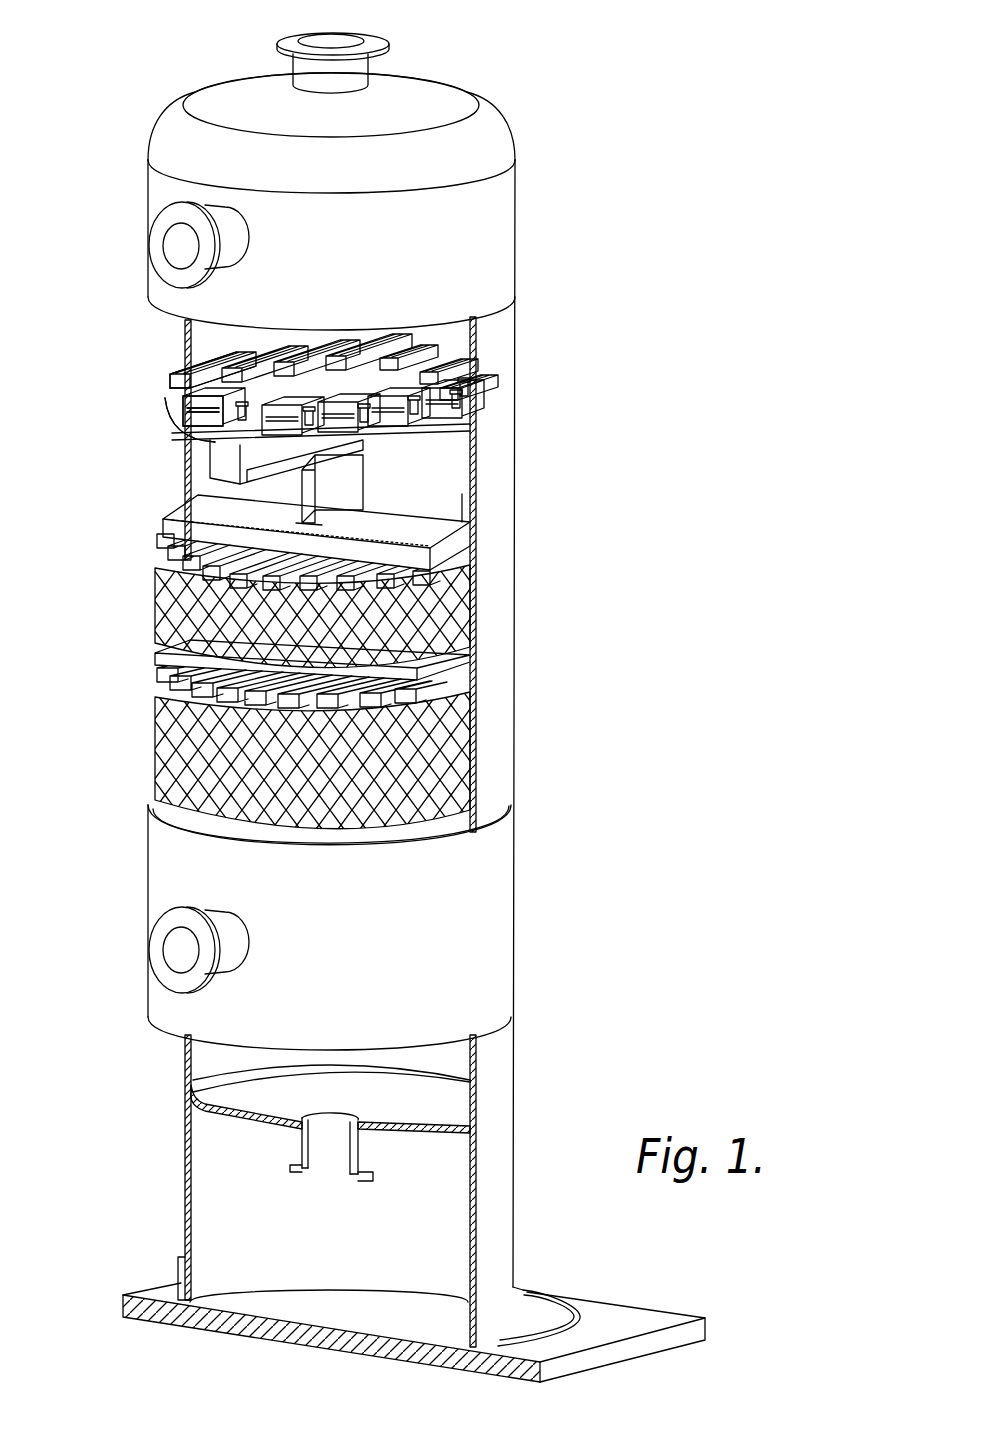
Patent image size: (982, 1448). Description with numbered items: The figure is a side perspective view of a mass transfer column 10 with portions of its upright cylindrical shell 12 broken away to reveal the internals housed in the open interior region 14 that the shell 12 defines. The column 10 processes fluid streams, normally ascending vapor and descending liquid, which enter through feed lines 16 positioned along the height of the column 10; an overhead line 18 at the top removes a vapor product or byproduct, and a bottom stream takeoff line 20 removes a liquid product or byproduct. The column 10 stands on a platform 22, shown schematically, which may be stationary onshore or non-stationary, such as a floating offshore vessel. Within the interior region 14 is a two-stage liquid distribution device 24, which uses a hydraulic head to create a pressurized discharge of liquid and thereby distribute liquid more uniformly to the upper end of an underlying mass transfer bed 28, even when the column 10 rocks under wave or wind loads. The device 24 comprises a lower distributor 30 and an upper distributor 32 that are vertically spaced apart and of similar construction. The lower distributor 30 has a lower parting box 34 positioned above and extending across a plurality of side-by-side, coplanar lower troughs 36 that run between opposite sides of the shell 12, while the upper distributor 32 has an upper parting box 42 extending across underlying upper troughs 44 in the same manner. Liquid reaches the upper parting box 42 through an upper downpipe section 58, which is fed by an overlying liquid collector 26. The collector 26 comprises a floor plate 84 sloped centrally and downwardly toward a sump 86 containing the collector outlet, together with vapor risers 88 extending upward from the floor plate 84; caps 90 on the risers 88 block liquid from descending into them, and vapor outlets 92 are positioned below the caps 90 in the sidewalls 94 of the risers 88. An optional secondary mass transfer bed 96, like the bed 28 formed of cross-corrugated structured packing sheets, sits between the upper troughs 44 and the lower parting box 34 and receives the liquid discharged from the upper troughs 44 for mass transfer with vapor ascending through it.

The mass transfer column 10 is at (518, 392).
The shell 12 is at (475, 332).
The open interior region 14 is at (459, 490).
The feed lines 16 is at (172, 246).
The overhead line 18 is at (352, 41).
The bottom stream takeoff line 20 is at (335, 1165).
The platform 22 is at (600, 1310).
The two-stage liquid distribution device 24 is at (170, 500).
The liquid collector 26 is at (168, 437).
The mass transfer bed 28 is at (152, 744).
The lower distributor 30 is at (149, 663).
The upper distributor 32 is at (150, 556).
The lower parting box 34 is at (459, 662).
The lower troughs 36 is at (461, 675).
The upper parting box 42 is at (454, 553).
The upper troughs 44 is at (461, 571).
The upper downpipe section 58 is at (347, 480).
The floor plate 84 is at (172, 418).
The sump 86 is at (220, 465).
The vapor risers 88 is at (150, 403).
The caps 90 is at (175, 370).
The vapor outlets 92 is at (170, 388).
The sidewalls 94 is at (175, 408).
The secondary mass transfer bed 96 is at (152, 603).